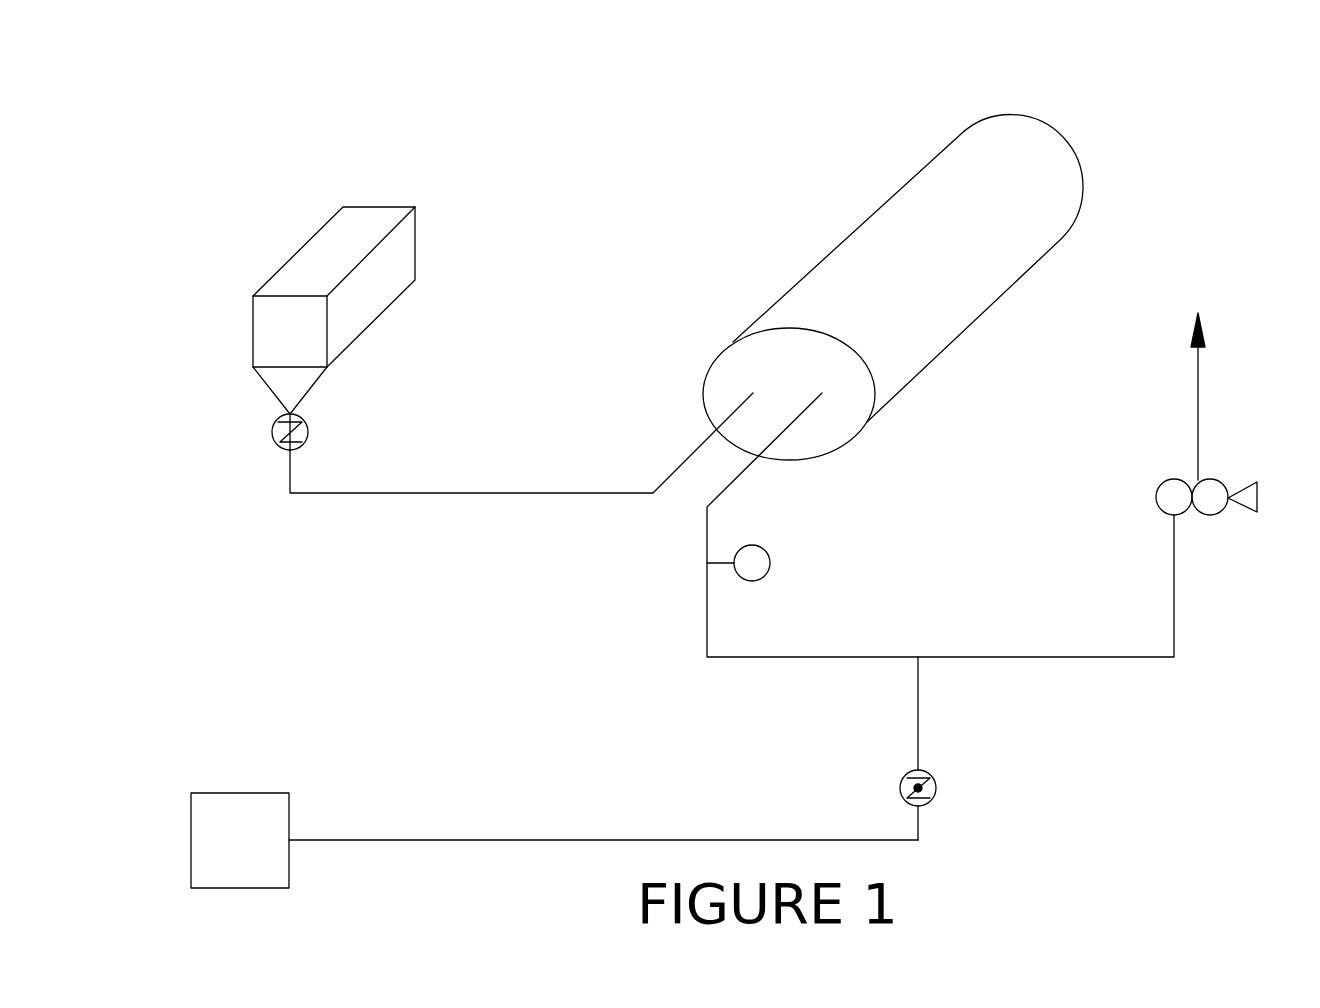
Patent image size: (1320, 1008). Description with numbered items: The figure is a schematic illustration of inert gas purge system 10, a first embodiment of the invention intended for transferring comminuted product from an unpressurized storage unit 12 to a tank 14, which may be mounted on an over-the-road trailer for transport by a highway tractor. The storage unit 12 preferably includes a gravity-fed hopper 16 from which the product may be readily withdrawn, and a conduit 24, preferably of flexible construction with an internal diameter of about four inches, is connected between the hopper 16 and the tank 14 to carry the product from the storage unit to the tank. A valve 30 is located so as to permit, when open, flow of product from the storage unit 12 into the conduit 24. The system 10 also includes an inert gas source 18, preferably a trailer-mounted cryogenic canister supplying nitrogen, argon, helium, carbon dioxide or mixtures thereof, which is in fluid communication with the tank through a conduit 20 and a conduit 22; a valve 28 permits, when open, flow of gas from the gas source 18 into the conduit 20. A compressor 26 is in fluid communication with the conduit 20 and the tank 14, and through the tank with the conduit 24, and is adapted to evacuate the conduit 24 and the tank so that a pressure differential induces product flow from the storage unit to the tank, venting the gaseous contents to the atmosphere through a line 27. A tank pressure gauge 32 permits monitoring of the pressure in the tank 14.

The inert gas purge system 10 is at (558, 146).
The unpressurized storage unit 12 is at (403, 287).
The tank 14 is at (955, 316).
The gravity-fed hopper 16 is at (302, 388).
The inert gas source 18 is at (191, 850).
The conduit 20 is at (845, 657).
The conduit 22 is at (440, 840).
The conduit 24 is at (438, 493).
The compressor 26 is at (1224, 462).
The line 27 is at (1198, 404).
The valve 28 is at (936, 782).
The valve 30 is at (272, 437).
The tank pressure gauge 32 is at (770, 563).